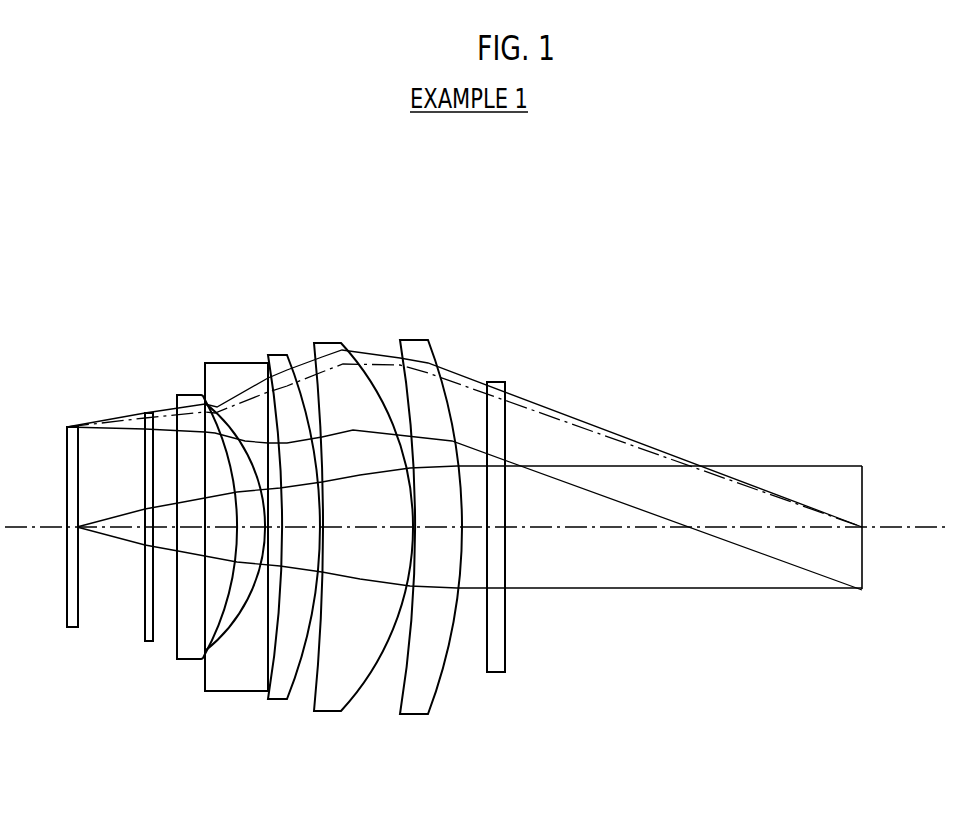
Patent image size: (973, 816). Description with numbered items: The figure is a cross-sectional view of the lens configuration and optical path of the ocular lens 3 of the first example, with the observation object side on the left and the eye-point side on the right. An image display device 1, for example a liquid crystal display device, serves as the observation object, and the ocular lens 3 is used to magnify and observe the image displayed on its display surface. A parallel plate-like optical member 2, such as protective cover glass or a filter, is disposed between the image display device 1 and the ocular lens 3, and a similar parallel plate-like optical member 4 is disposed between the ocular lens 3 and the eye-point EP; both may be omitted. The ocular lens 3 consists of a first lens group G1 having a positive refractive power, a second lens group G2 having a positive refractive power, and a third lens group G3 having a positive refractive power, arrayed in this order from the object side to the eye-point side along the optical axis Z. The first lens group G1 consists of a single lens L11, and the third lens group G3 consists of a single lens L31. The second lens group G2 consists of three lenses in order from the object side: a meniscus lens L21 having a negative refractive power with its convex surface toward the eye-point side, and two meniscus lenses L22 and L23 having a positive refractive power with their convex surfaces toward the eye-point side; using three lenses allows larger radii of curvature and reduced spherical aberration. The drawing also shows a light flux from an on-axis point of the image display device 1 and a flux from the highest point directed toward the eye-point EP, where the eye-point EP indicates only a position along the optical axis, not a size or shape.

The image display device 1 is at (73, 630).
The parallel plate-like optical member 2 is at (149, 643).
The ocular lens 3 is at (314, 484).
The parallel plate-like optical member 4 is at (492, 675).
The first lens group G1 is at (180, 417).
The second lens group G2 is at (309, 443).
The third lens group G3 is at (452, 444).
The lens L11 is at (192, 393).
The lens L21 is at (245, 368).
The lens L22 is at (283, 353).
The lens L23 is at (363, 466).
The lens L31 is at (413, 339).
The eye-point EP is at (865, 478).
The optical axis Z is at (913, 526).